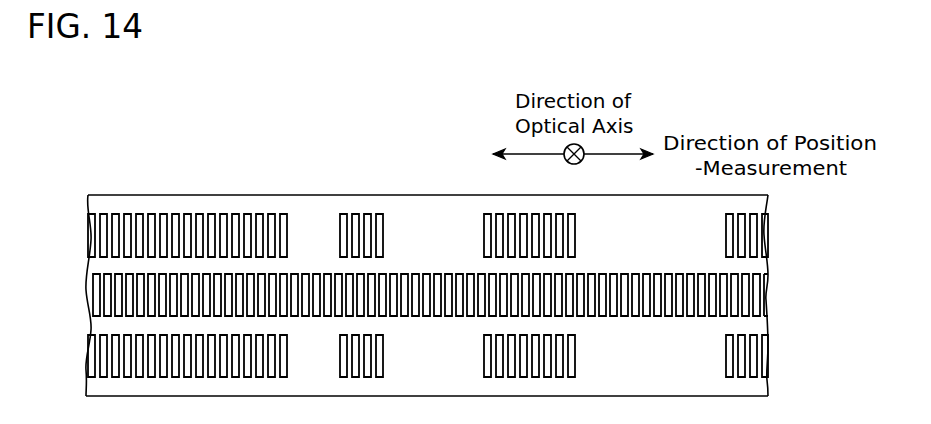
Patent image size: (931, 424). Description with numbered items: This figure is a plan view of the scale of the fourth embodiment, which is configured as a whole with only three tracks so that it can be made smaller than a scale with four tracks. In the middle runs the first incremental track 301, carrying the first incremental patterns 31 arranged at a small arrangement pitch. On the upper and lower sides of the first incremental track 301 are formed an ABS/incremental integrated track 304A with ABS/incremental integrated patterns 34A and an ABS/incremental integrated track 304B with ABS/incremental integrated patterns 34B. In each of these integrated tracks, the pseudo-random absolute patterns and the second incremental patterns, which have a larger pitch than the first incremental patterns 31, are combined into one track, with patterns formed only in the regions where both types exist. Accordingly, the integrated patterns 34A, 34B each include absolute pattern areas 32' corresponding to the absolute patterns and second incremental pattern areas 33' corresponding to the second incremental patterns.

The first incremental patterns 31 is at (94, 297).
The absolute pattern areas 32' is at (362, 198).
The second incremental pattern areas 33' is at (208, 206).
The ABS/incremental integrated patterns 34A is at (101, 238).
The ABS/incremental integrated patterns 34B is at (93, 358).
The first incremental track 301 is at (762, 300).
The ABS/incremental integrated track 304A is at (763, 238).
The ABS/incremental integrated track 304B is at (763, 359).